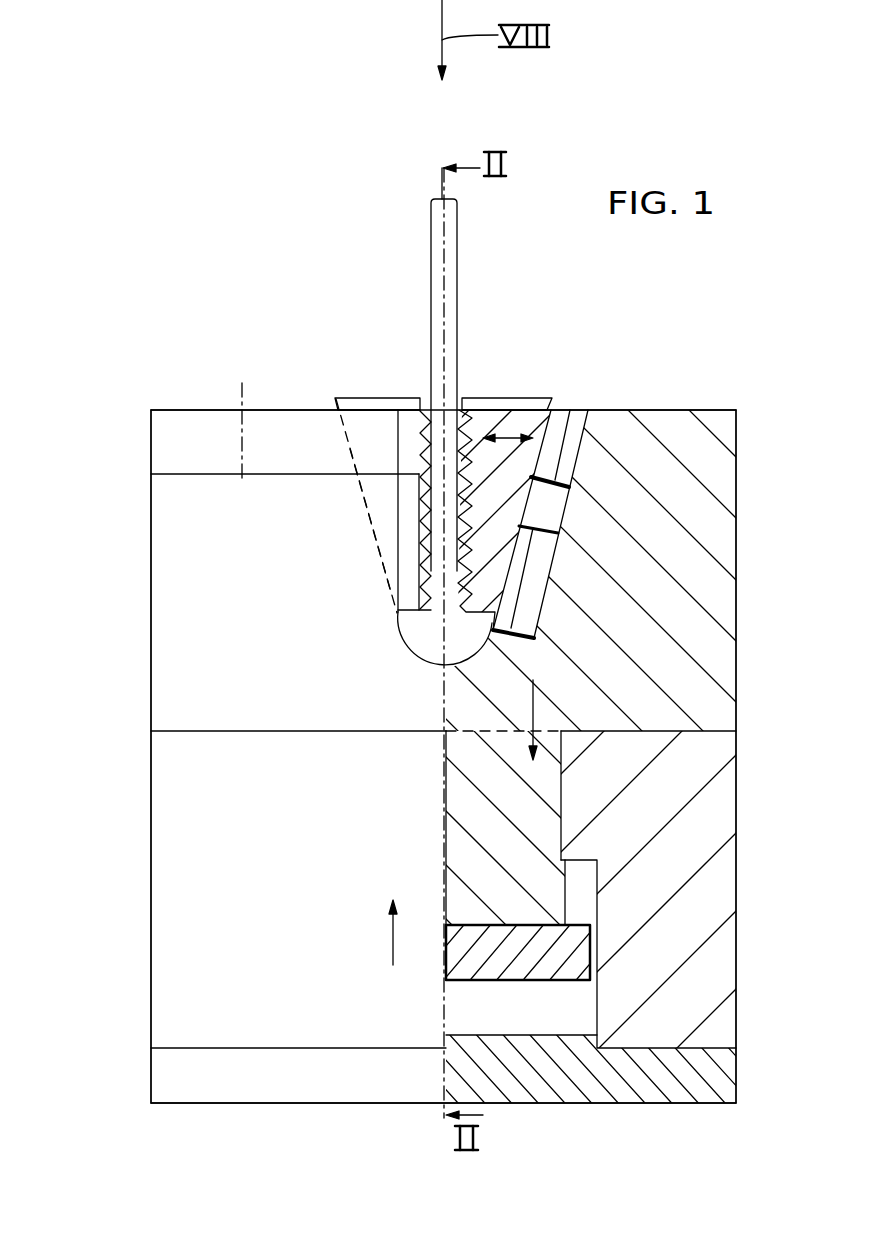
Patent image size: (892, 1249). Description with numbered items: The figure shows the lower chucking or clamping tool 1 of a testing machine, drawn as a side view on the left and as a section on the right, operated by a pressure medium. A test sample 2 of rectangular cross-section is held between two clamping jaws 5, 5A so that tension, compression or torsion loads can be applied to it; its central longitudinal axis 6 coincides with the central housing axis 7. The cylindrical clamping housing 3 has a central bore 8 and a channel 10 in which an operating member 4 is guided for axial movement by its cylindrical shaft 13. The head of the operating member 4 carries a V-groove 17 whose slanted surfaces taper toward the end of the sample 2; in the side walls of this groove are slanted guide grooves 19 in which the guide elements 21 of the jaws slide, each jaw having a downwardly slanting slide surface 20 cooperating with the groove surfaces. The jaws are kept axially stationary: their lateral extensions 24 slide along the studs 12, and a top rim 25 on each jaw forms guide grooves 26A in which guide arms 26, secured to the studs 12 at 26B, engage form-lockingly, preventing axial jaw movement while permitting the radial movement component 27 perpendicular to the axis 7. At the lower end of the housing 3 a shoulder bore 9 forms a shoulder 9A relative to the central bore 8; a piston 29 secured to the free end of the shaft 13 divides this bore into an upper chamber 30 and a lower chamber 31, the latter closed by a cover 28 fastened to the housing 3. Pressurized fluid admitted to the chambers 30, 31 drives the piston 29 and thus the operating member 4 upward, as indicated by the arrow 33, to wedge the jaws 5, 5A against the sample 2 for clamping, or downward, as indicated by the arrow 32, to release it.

The chucking or clamping tool 1 is at (258, 238).
The test sample 2 is at (450, 229).
The clamping housing 3 is at (223, 888).
The operating member 4 is at (628, 617).
The clamping jaw 5 is at (487, 398).
The clamping jaw 5A is at (367, 440).
The central longitudinal axis of the sample 6 is at (442, 309).
The central housing axis 7 is at (434, 805).
The central bore 8 is at (574, 800).
The shoulder bore 9 is at (609, 956).
The shoulder 9A is at (590, 848).
The channel 10 is at (292, 731).
The stud 12 is at (177, 603).
The cylindrical shaft 13 is at (496, 841).
The V-groove 17 is at (425, 652).
The guide groove 19 is at (582, 410).
The slide surface 20 is at (375, 495).
The guide element 21 is at (547, 498).
The lateral extension 24 is at (407, 581).
The top rim 25 is at (356, 398).
The guide arm 26 is at (180, 447).
The guide groove 26A is at (405, 399).
The securing location of guide arm 26B is at (242, 407).
The radial movement component 27 is at (530, 398).
The cover 28 is at (502, 1083).
The piston 29 is at (470, 957).
The upper chamber 30 is at (582, 885).
The lower chamber 31 is at (550, 1018).
The release arrow 32 is at (535, 708).
The clamping arrow 33 is at (393, 947).